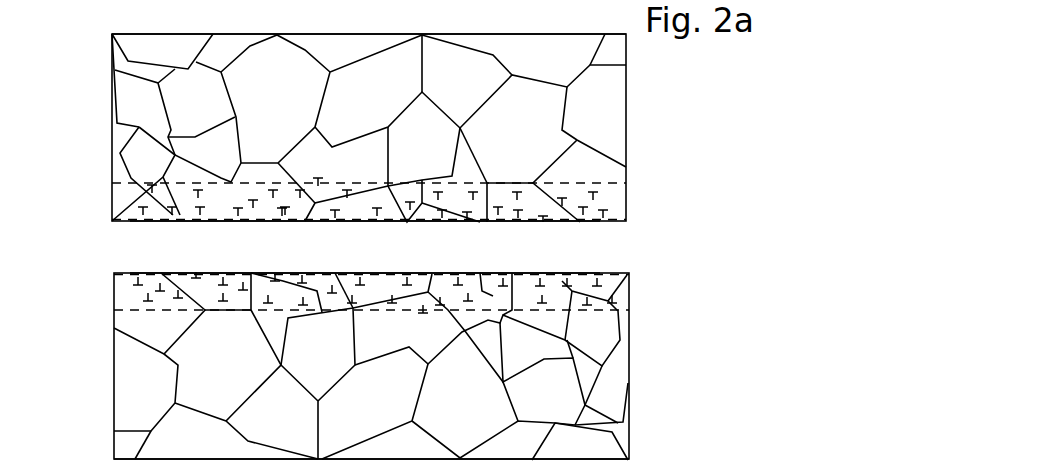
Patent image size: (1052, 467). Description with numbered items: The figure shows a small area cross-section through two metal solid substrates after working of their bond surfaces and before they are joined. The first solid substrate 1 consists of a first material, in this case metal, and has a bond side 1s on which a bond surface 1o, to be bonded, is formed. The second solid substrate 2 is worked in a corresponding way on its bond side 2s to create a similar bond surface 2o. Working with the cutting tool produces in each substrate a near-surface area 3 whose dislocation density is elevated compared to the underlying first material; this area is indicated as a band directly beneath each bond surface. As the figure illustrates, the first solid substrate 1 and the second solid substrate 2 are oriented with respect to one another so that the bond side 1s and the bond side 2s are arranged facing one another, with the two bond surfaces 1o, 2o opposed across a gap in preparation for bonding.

The first solid substrate 1 is at (617, 392).
The second solid substrate 2 is at (612, 115).
The near-surface area 3 is at (645, 190).
The bond side 1s is at (624, 268).
The bond side 2s is at (623, 231).
The bond surface 1o is at (138, 272).
The bond surface 2o is at (162, 220).